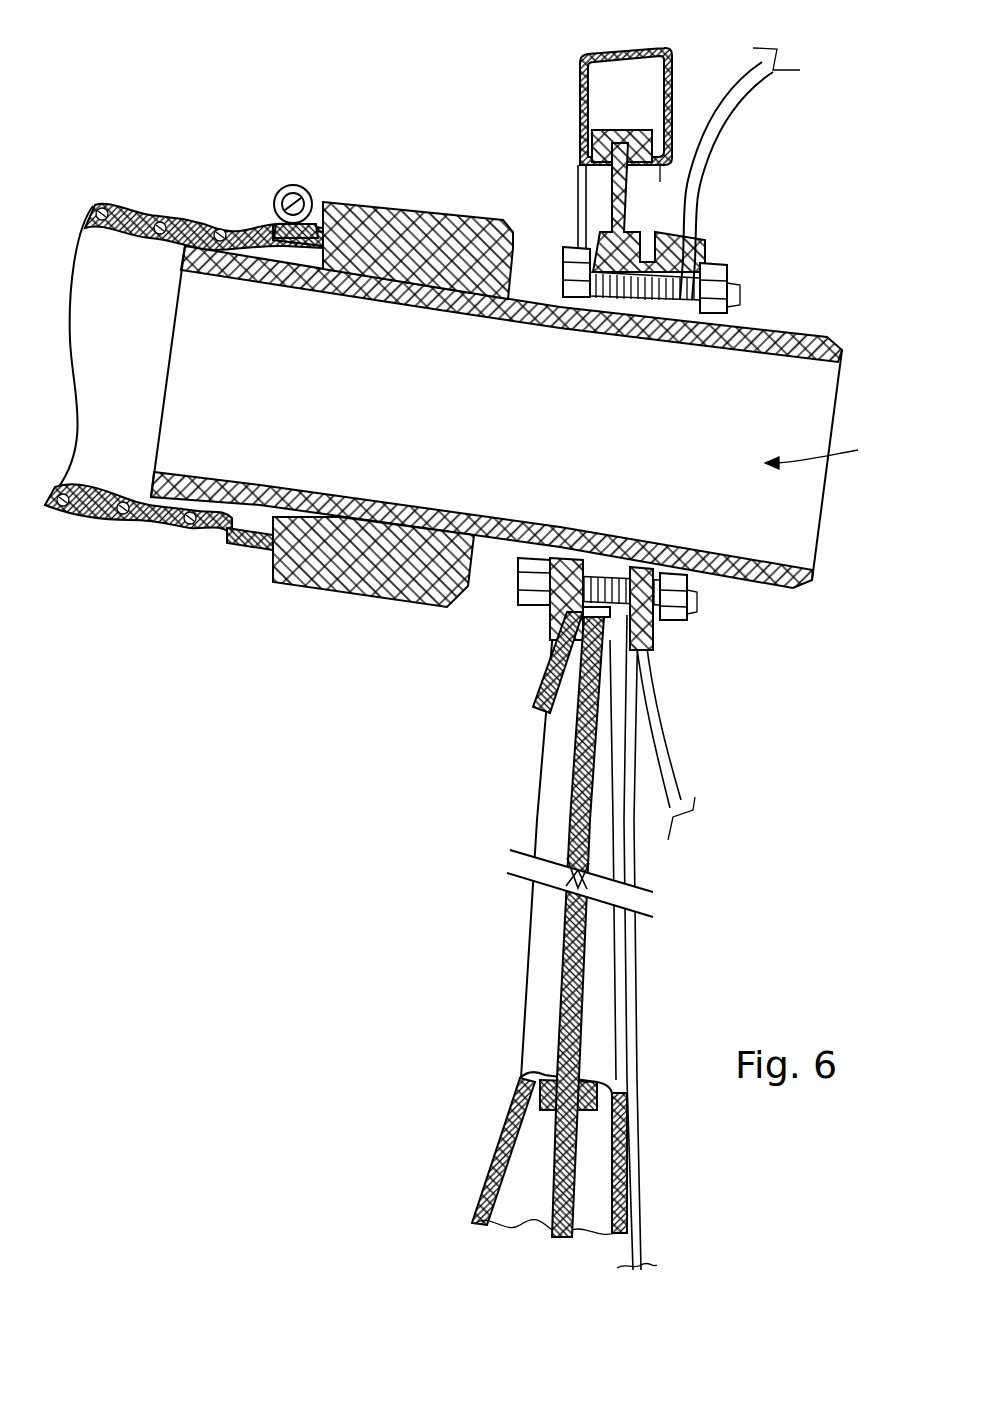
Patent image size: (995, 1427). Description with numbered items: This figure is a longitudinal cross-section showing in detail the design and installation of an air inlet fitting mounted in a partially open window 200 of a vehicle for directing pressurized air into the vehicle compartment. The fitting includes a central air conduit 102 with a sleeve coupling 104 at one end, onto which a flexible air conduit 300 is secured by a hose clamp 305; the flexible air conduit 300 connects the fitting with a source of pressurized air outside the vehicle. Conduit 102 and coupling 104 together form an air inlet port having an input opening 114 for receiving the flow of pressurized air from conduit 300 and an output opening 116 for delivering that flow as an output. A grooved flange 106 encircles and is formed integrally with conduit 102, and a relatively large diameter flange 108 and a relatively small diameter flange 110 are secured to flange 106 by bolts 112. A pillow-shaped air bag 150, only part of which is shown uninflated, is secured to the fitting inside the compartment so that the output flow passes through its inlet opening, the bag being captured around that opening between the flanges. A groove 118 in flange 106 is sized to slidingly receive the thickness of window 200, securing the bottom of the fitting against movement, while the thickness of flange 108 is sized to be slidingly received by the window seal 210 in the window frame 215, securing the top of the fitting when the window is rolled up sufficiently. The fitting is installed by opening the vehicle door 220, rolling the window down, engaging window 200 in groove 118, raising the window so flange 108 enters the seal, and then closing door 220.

The central air conduit 102 is at (767, 333).
The sleeve coupling 104 is at (430, 213).
The grooved flange 106 is at (628, 230).
The relatively large diameter flange 108 is at (543, 667).
The relatively small diameter flange 110 is at (652, 637).
The bolts 112 is at (742, 296).
The input opening 114 is at (210, 382).
The output opening 116 is at (833, 446).
The groove 118 is at (650, 252).
The air bag 150 is at (727, 103).
The window 200 is at (563, 982).
The window seal 210 is at (605, 128).
The window frame 215 is at (640, 52).
The vehicle door 220 is at (500, 1123).
The flexible air conduit 300 is at (180, 207).
The hose clamp 305 is at (290, 184).